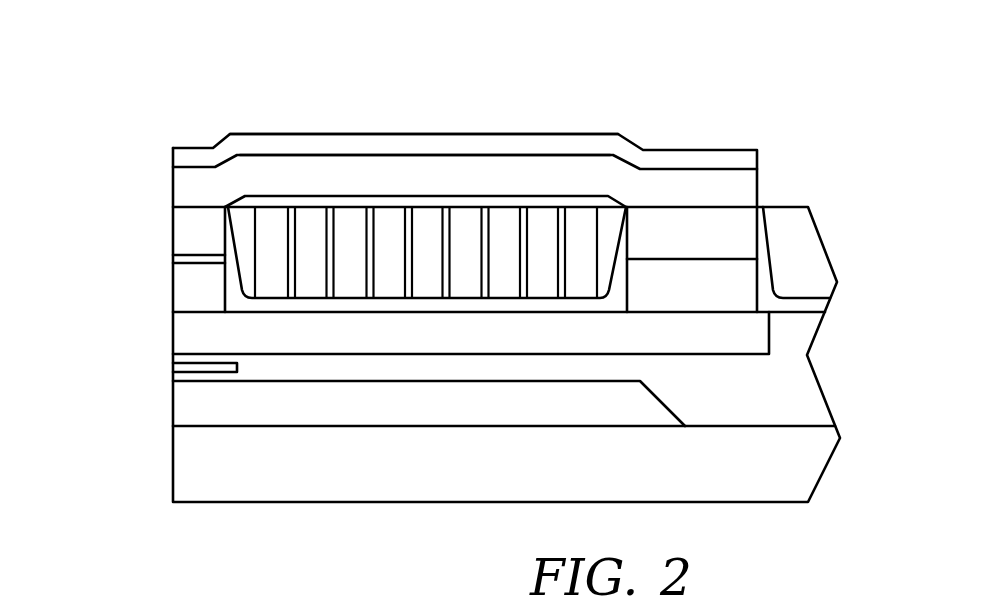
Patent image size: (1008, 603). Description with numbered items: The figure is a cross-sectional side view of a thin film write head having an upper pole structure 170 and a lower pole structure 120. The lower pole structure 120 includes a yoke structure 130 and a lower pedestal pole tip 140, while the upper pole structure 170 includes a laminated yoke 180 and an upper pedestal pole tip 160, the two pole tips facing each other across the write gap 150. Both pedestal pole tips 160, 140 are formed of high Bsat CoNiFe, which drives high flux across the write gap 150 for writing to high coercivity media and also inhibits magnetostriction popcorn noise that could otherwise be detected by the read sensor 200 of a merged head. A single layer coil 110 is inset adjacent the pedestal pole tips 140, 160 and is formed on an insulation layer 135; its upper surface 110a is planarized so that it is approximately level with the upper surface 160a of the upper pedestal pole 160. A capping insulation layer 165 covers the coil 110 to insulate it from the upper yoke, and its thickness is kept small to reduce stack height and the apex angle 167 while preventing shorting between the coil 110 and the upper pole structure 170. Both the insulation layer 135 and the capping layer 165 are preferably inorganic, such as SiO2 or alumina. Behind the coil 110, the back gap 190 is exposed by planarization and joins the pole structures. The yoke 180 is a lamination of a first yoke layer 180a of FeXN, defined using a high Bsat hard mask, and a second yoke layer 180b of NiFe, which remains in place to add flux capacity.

The upper pole structure 170 is at (215, 148).
The single layer coil 110 is at (278, 225).
The upper surface of the conductor coil 110a is at (355, 203).
The capping insulation layer 165 is at (387, 198).
The apex angle 167 is at (245, 196).
The yoke 180 is at (490, 134).
The first yoke layer 180a is at (433, 170).
The second yoke layer 180b is at (542, 148).
The back gap 190 is at (678, 235).
The upper surface of the upper pedestal pole 160a is at (198, 204).
The upper pedestal pole tip 160 is at (193, 222).
The write gap 150 is at (188, 268).
The lower pedestal pole tip 140 is at (193, 285).
The insulation layer 135 is at (262, 305).
The read sensor 200 is at (203, 367).
The lower yoke structure 130 is at (415, 357).
The lower pole structure 120 is at (346, 354).